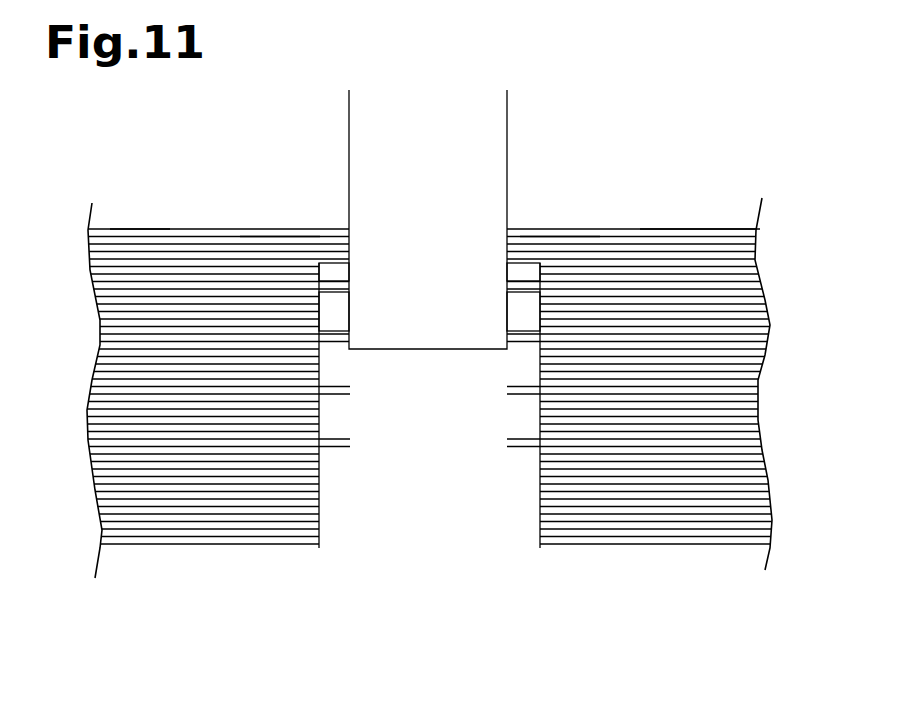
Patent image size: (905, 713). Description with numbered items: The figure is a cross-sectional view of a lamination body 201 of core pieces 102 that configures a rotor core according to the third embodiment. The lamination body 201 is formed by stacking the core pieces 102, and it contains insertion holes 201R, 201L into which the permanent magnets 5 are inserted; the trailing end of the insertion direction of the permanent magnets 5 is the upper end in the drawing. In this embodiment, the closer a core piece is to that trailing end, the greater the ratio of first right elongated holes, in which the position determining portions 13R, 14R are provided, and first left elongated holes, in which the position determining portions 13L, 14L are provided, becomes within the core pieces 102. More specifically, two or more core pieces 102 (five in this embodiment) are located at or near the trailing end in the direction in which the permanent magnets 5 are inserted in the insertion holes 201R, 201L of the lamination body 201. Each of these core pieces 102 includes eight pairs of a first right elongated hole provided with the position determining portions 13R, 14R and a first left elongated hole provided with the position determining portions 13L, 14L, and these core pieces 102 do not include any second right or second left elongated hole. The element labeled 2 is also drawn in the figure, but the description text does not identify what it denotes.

The wire 2 is at (157, 260).
The core piece 102 is at (312, 262).
The permanent magnet 5 is at (428, 340).
The position determining portion 13R is at (364, 365).
The position determining portion 13L is at (350, 333).
The position determining portion 14R is at (496, 365).
The position determining portion 14L is at (496, 352).
The lamination body 201 is at (468, 388).
The insertion hole 201R is at (601, 384).
The insertion hole 201L is at (422, 436).